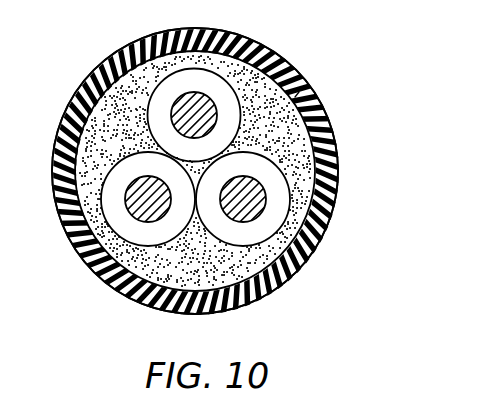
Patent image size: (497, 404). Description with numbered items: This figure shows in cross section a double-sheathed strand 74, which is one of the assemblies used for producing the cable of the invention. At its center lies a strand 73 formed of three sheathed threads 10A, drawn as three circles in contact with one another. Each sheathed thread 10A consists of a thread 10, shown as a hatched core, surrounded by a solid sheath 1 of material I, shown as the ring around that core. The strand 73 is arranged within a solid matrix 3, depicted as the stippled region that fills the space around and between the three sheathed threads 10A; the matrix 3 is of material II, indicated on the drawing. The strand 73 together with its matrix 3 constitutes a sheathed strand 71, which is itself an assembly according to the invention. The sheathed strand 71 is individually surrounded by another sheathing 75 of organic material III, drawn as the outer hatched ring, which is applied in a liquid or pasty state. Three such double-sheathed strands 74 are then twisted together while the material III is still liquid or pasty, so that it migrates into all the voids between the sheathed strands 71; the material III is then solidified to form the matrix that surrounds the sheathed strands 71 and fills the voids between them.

The solid sheath 1 is at (291, 279).
The sheathed strand 71 is at (82, 91).
The sheathing 75 is at (252, 35).
The double-sheathed strand 74 is at (328, 70).
The material II is at (297, 94).
The material III is at (58, 274).
The solid matrix 3 is at (292, 125).
The thread 10 is at (277, 262).
The strand 73 is at (284, 166).
The sheathed thread 10A is at (258, 209).